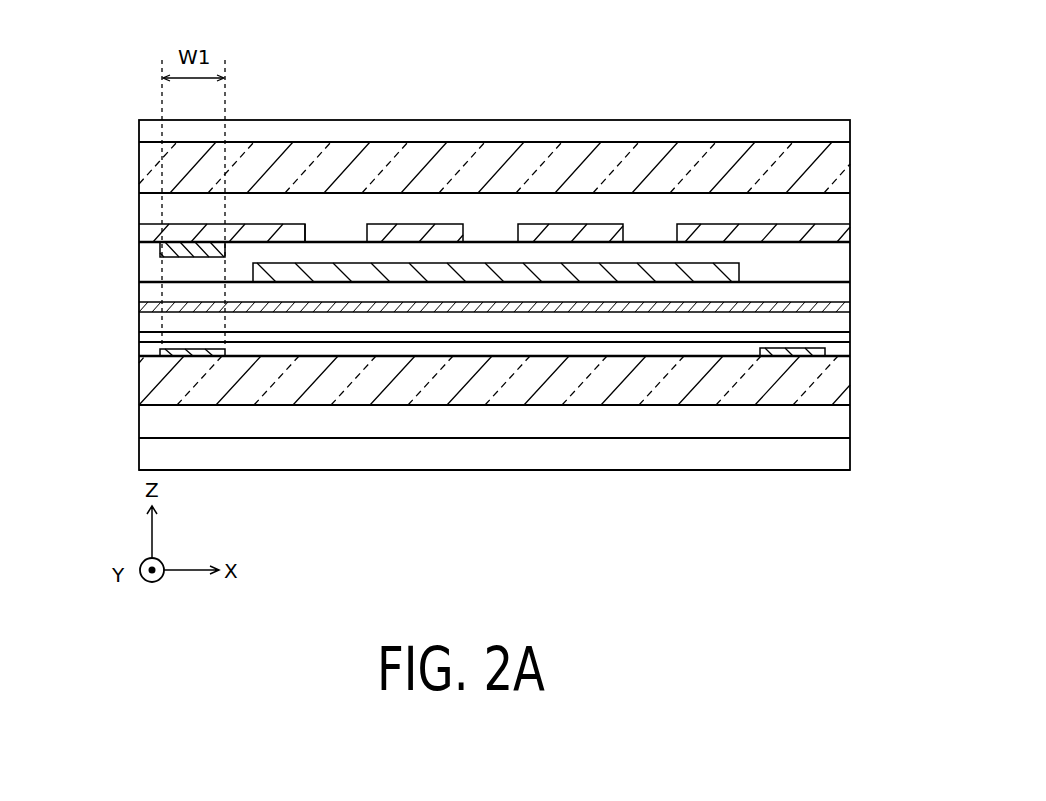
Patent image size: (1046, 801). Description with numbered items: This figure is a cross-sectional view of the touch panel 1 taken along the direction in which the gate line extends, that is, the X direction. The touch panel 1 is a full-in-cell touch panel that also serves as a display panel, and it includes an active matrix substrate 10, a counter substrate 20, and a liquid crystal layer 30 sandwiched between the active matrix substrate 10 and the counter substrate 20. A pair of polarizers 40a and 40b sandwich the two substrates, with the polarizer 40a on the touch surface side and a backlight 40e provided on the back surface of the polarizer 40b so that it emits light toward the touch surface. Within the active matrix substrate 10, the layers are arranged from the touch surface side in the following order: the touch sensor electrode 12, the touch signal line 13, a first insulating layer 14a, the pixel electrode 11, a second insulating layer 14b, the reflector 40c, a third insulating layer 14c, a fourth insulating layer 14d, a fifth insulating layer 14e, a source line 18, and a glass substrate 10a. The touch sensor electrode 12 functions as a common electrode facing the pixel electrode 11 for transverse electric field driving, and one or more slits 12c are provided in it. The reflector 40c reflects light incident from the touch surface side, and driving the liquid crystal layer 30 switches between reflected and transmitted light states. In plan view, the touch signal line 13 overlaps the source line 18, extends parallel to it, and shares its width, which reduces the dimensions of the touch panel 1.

The touch panel 1 is at (354, 85).
The active matrix substrate 10 is at (60, 225).
The glass substrate 10a is at (177, 406).
The pixel electrode 11 is at (283, 262).
The touch sensor electrode 12 is at (148, 230).
The slit 12c is at (307, 235).
The touch signal line 13 is at (163, 251).
The first insulating layer 14a is at (165, 273).
The second insulating layer 14b is at (172, 319).
The third insulating layer 14c is at (170, 339).
The fourth insulating layer 14d is at (165, 352).
The fifth insulating layer 14e is at (263, 352).
The source line 18 is at (177, 390).
The counter substrate 20 is at (843, 164).
The liquid crystal layer 30 is at (843, 210).
The polarizer 40a is at (843, 131).
The polarizer 40b is at (843, 428).
The reflector 40c is at (843, 305).
The backlight 40e is at (843, 458).